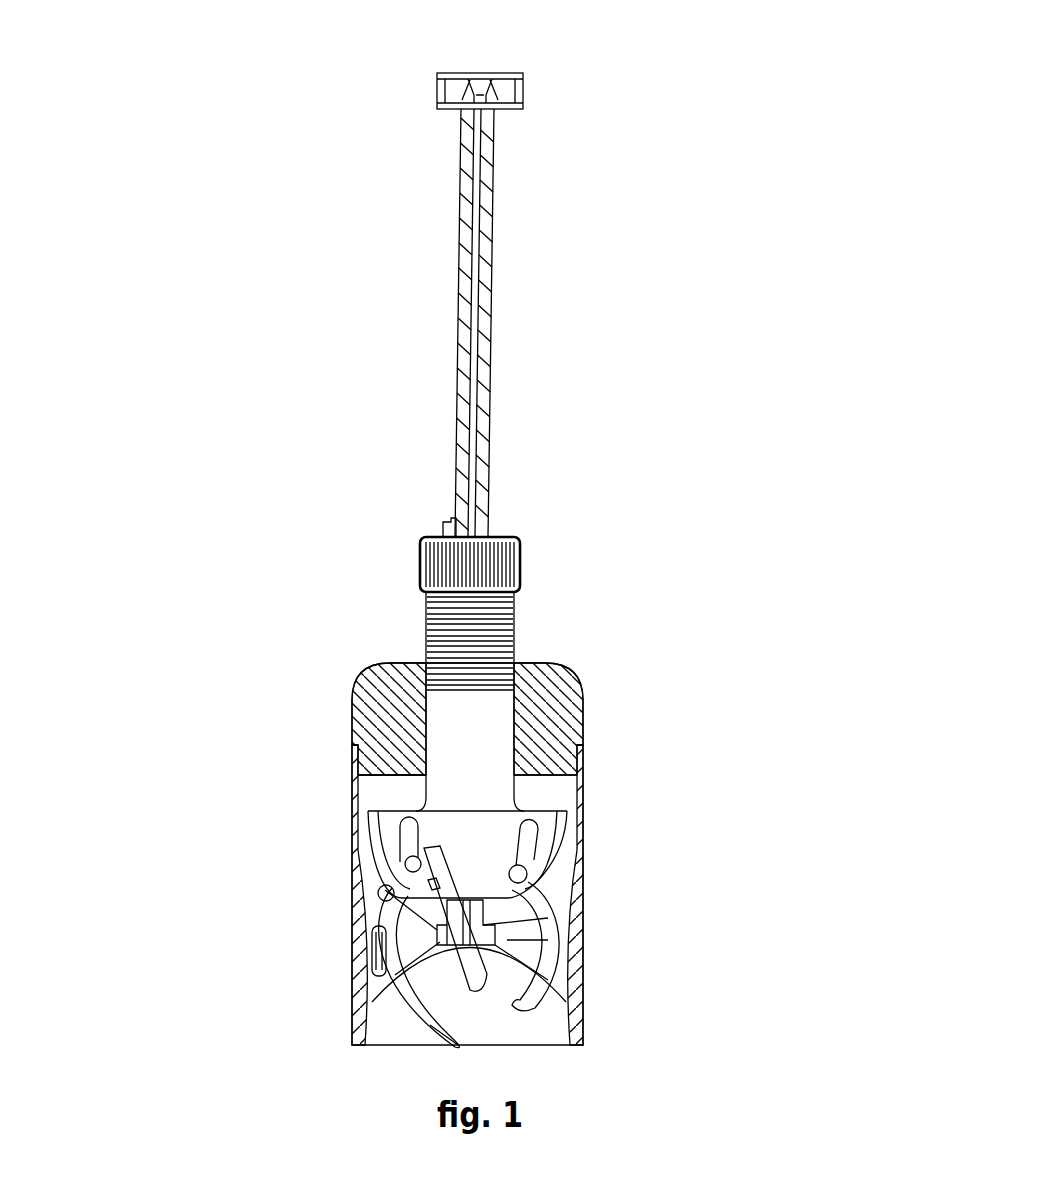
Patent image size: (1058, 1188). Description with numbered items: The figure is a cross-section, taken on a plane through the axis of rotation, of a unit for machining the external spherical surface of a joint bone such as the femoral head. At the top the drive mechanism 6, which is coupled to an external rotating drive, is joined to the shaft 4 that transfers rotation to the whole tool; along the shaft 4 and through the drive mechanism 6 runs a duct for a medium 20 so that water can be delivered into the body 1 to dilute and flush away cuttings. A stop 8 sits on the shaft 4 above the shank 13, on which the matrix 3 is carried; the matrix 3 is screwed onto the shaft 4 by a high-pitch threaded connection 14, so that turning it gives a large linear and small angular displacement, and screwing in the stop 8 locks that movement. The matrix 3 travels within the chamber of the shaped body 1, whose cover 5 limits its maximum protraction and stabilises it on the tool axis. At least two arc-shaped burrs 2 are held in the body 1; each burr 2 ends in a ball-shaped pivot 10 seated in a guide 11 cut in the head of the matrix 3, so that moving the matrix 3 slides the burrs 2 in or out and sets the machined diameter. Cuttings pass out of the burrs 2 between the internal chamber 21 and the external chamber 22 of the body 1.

The body 1 is at (580, 1032).
The burr 2 is at (395, 1022).
The matrix 3 is at (548, 811).
The shaft 4 is at (494, 190).
The cover 5 is at (563, 673).
The drive mechanism 6 is at (523, 73).
The stop 8 is at (445, 527).
The ball-shaped pivot 10 is at (380, 897).
The guide 11 is at (398, 825).
The shank 13 is at (420, 778).
The threaded connection 14 is at (426, 610).
The duct for a medium 20 is at (481, 322).
The internal chamber 21 is at (566, 877).
The external chamber 22 is at (538, 1008).